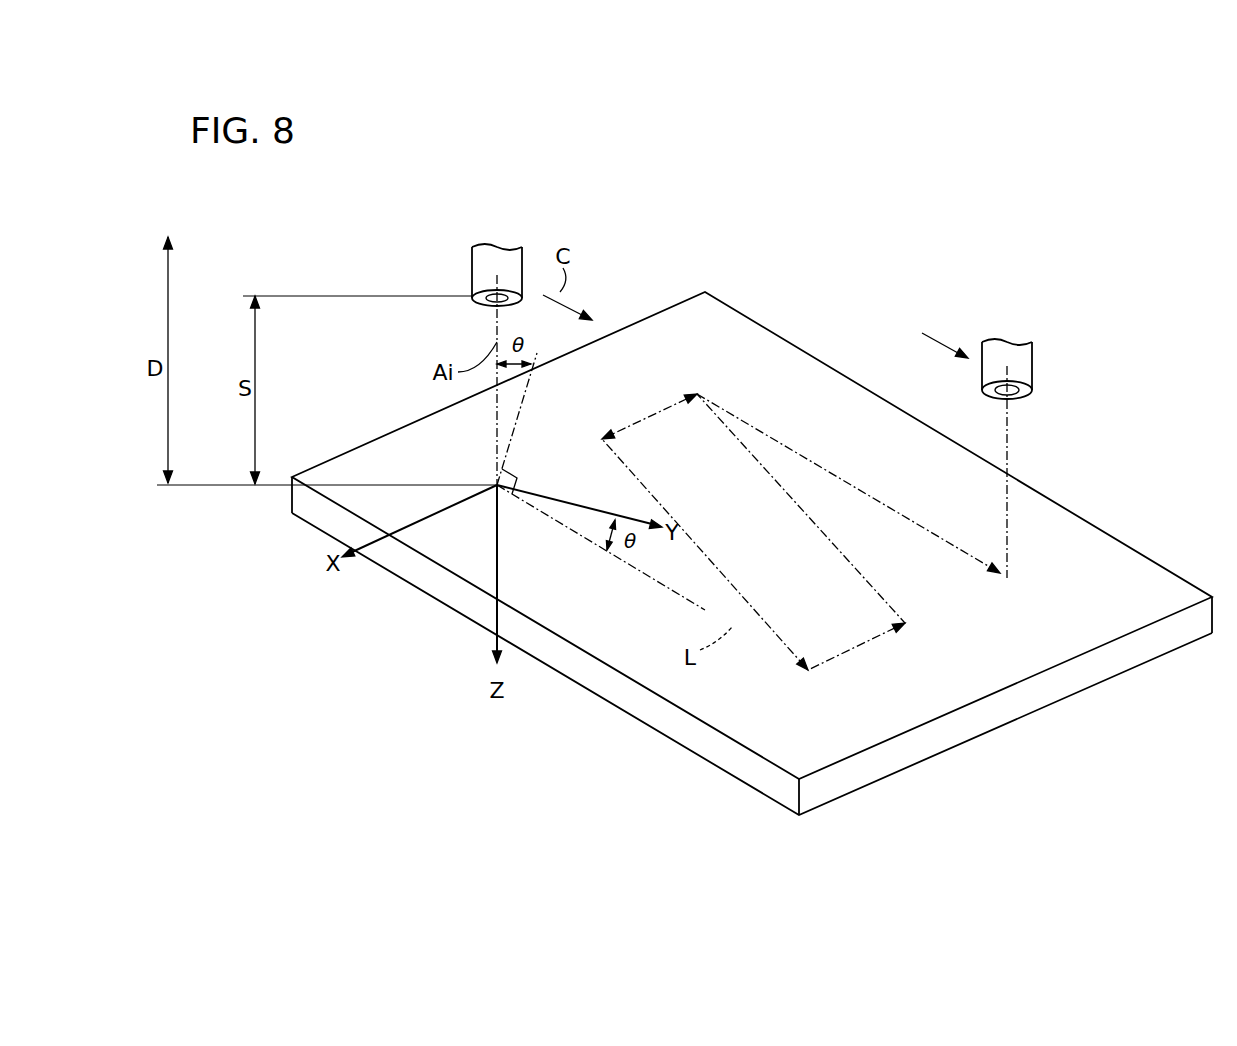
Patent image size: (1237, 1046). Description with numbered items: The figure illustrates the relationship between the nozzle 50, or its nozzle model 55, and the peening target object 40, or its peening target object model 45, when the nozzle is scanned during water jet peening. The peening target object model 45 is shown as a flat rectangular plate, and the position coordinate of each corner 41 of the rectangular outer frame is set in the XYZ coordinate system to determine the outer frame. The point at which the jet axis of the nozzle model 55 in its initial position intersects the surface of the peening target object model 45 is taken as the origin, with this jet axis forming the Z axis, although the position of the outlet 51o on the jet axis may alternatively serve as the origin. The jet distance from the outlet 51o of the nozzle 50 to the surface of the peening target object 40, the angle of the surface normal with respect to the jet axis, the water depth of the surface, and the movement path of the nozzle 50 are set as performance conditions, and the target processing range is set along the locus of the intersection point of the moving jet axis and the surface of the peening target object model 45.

The peening target object 40 is at (750, 535).
The corner 41 is at (705, 292).
The peening target object model 45 is at (1058, 492).
The nozzle 50 is at (752, 399).
The outlet 51o is at (488, 306).
The nozzle model 55 is at (752, 399).